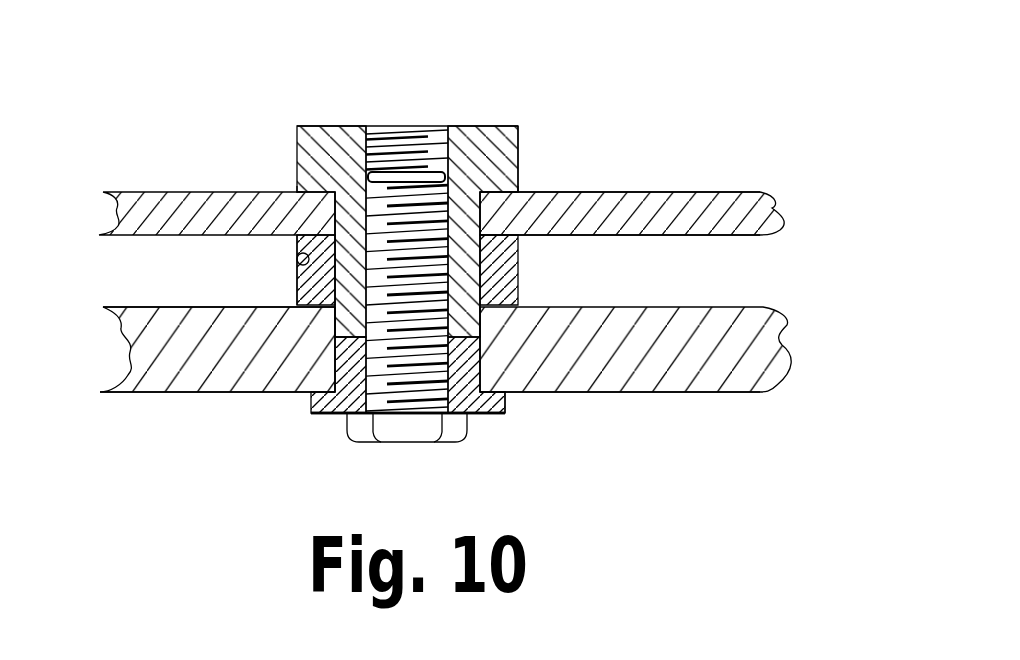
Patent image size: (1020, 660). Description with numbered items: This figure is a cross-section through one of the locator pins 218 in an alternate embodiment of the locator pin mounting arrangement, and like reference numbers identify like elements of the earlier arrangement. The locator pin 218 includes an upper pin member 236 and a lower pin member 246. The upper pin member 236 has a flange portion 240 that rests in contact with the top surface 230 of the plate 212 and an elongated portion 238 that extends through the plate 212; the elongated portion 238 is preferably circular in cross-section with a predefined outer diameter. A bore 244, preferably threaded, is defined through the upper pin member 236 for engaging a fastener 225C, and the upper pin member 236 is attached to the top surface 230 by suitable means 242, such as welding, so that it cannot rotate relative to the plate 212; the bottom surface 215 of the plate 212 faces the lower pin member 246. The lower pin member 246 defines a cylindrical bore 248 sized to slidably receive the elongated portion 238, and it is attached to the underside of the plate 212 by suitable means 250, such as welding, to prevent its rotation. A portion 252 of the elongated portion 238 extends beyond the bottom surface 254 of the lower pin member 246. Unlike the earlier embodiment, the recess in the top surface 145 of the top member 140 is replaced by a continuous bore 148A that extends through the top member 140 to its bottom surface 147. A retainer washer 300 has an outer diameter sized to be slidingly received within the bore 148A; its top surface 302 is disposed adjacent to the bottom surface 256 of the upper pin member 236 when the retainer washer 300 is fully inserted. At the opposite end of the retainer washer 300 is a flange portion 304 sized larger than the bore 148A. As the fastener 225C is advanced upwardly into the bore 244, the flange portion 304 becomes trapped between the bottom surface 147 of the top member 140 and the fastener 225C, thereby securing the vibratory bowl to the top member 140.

The top member 140 is at (788, 332).
The top surface 145 is at (130, 306).
The bottom surface 147 is at (720, 393).
The bore 148A is at (353, 341).
The plate 212 is at (780, 200).
The lower surface of upper panel 215 is at (702, 237).
The locator pin 218 is at (404, 184).
The fastener 225C is at (467, 443).
The top surface 230 is at (688, 192).
The upper pin member 236 is at (475, 126).
The elongated portion 238 is at (520, 276).
The flange portion 240 is at (520, 139).
The suitable means 242 is at (295, 187).
The bore 244 is at (405, 145).
The lower pin member 246 is at (520, 248).
The cylindrical bore 248 is at (294, 270).
The suitable means 250 is at (296, 256).
The portion 252 is at (483, 309).
The bottom surface 254 is at (336, 338).
The bottom surface 256 is at (312, 394).
The retainer washer 300 is at (482, 352).
The top surface 302 is at (503, 411).
The flange portion 304 is at (490, 416).